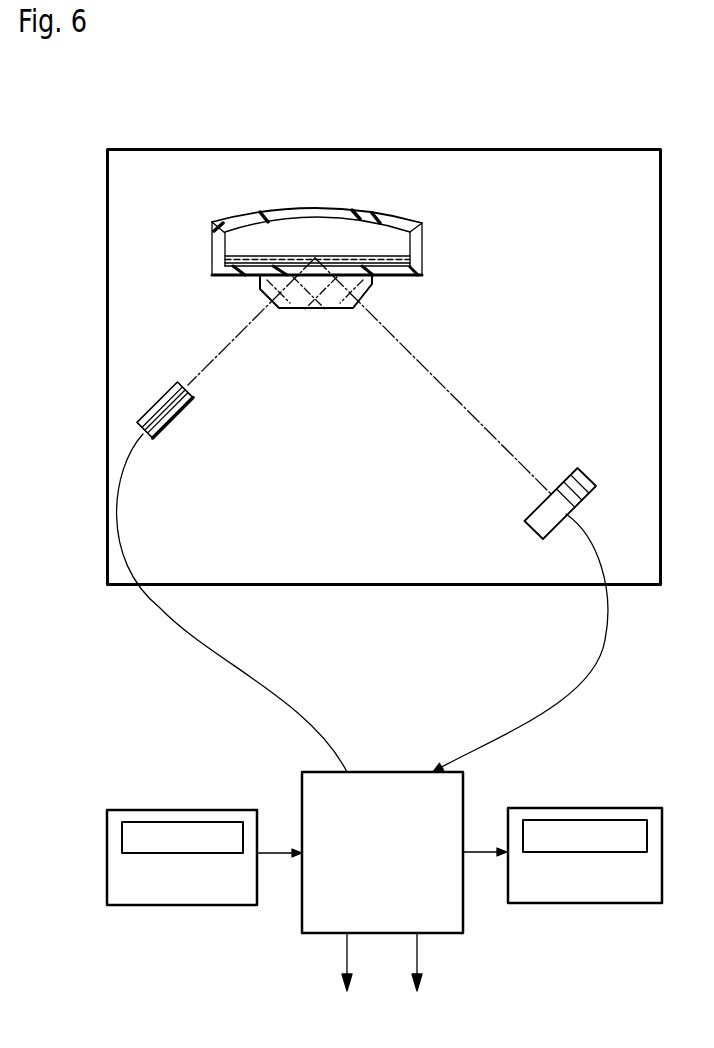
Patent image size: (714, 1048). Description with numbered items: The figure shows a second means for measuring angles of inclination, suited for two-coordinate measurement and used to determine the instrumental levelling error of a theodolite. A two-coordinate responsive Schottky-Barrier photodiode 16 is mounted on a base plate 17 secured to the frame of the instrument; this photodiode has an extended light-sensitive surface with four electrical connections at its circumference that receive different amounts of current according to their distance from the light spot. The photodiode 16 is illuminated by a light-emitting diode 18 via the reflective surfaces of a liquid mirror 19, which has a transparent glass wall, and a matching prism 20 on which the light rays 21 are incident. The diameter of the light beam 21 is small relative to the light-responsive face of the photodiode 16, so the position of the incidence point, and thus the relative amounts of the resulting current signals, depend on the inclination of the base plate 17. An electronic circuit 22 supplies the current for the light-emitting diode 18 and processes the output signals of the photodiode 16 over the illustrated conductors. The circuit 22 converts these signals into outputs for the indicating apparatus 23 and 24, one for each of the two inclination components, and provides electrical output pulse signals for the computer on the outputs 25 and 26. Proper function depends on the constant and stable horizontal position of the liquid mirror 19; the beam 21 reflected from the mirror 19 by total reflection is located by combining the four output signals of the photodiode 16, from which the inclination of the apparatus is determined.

The Schottky-Barrier photodiode 16 is at (582, 473).
The base plate 17 is at (107, 308).
The light-emitting diode 18 is at (165, 404).
The liquid mirror 19 is at (227, 247).
The matching prism 20 is at (300, 303).
The light beam 21 is at (483, 425).
The electronic circuit 22 is at (310, 786).
The indicating apparatus 23 is at (134, 814).
The indicating apparatus 24 is at (655, 814).
The output 25 is at (346, 961).
The output 26 is at (418, 967).